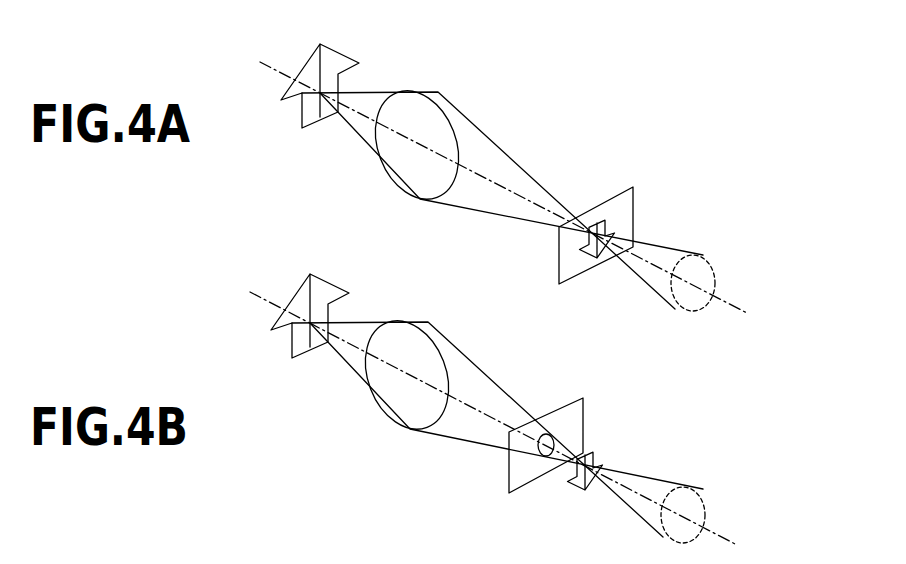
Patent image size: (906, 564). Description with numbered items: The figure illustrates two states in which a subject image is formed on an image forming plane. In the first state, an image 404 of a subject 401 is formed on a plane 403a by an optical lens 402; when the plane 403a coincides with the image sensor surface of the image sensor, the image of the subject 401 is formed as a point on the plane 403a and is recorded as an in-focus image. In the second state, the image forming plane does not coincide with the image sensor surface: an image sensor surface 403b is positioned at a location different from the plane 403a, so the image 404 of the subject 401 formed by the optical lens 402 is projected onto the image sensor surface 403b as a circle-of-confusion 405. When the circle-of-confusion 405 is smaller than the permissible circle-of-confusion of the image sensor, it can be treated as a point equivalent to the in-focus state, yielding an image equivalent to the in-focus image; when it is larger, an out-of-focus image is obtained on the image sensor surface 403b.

In FIG. 4A, the subject 401 is at (340, 53).
In FIG. 4B, the subject 401 is at (330, 283).
In FIG. 4A, the optical lens 402 is at (440, 92).
In FIG. 4B, the optical lens 402 is at (430, 322).
In FIG. 4A, the plane 403a is at (635, 208).
In FIG. 4B, the image sensor surface 403b is at (585, 412).
In FIG. 4A, the image 404 is at (597, 207).
In FIG. 4B, the image 404 is at (598, 448).
In FIG. 4B, the circle-of-confusion 405 is at (542, 437).